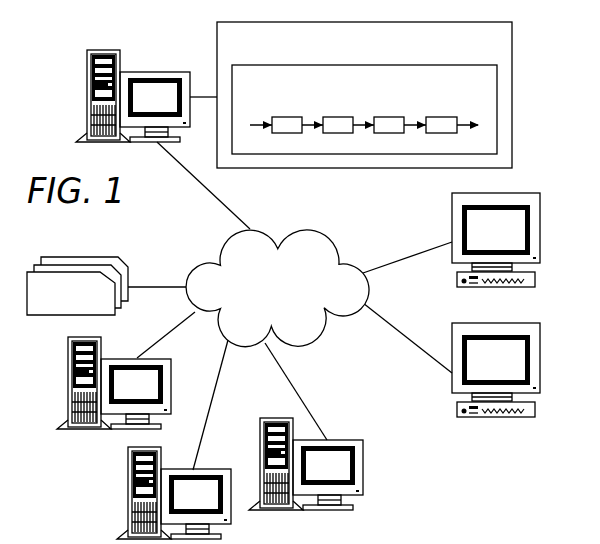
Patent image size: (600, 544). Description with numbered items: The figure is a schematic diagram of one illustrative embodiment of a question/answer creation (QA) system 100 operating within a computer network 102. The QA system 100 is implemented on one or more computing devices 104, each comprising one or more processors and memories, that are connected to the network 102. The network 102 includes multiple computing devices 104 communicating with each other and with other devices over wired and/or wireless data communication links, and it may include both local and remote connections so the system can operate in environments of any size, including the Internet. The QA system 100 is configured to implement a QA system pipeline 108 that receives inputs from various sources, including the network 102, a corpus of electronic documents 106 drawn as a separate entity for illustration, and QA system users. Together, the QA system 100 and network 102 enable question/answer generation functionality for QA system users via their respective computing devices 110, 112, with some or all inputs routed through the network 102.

The question/answer creation (QA) system 100 is at (217, 44).
The computer network 102 is at (308, 230).
The computing devices 104 is at (87, 72).
The corpus of electronic documents 106 is at (63, 257).
The QA system pipeline 108 is at (270, 65).
The computing device of QA system user 110 is at (540, 214).
The computing device of QA system user 112 is at (540, 346).